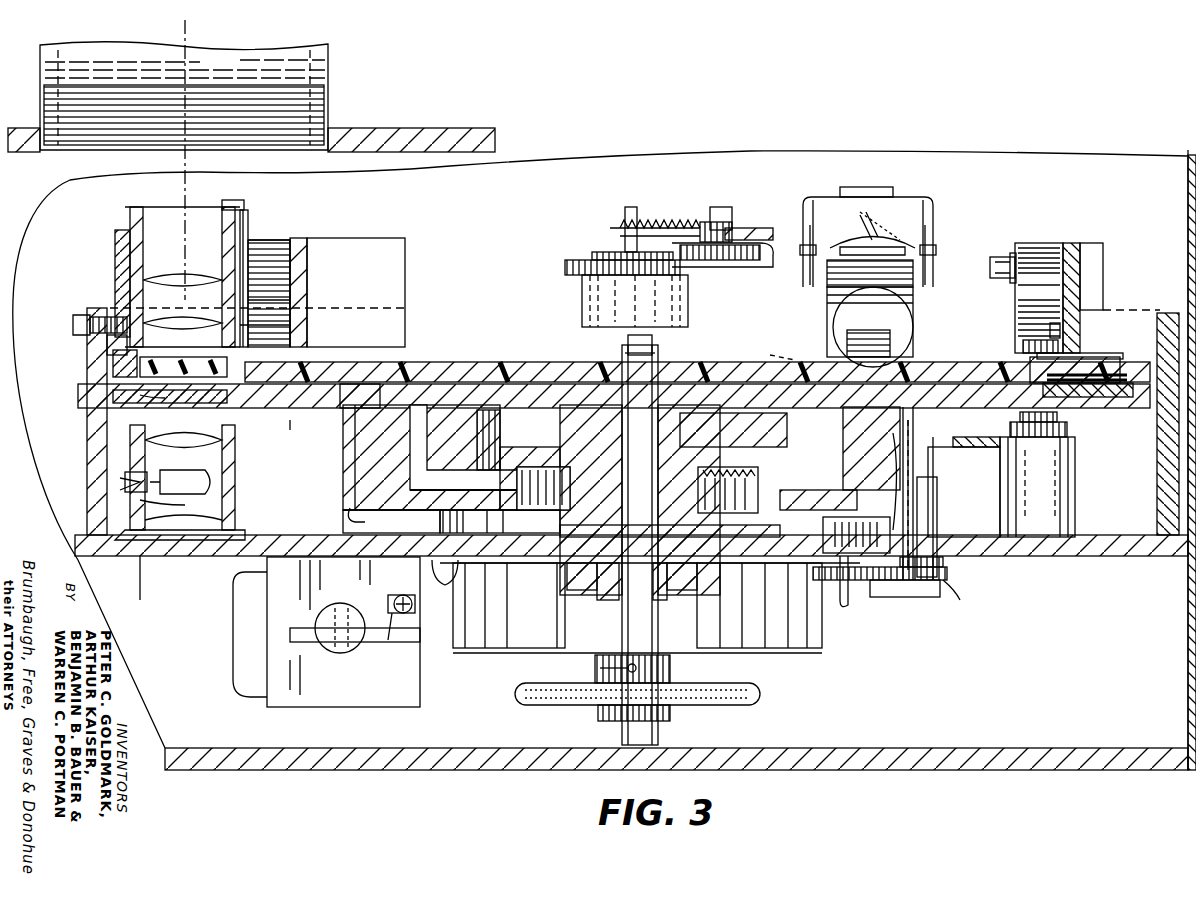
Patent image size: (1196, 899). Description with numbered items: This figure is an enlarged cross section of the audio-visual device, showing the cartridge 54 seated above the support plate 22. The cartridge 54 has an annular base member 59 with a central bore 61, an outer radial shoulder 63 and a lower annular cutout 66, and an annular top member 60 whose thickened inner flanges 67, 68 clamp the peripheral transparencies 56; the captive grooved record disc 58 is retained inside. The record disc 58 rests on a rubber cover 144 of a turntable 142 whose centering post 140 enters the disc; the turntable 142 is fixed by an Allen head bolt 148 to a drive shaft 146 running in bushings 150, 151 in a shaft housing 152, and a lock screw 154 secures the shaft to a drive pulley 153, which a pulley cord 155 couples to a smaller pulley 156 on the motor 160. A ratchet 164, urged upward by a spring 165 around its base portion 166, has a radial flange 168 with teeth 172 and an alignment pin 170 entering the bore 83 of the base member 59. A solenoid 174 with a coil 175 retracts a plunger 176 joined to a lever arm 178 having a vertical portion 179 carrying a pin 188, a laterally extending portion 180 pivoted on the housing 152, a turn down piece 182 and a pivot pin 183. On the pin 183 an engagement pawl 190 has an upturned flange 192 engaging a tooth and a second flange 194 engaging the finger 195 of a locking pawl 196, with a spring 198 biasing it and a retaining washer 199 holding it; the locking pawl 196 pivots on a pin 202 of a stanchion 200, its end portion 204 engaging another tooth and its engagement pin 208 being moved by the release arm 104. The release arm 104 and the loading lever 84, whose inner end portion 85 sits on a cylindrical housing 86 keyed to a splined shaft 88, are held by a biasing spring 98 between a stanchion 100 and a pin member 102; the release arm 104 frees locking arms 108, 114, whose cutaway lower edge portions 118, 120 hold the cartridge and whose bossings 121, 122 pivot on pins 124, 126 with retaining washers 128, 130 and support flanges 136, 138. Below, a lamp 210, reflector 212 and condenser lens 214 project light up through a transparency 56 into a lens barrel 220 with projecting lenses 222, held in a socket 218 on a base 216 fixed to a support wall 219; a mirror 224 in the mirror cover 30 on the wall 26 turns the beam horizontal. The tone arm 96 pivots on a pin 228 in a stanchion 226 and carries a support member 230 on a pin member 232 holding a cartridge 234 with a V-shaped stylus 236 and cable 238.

The support plate 22 is at (135, 590).
The wall 26 is at (425, 128).
The fixed mirror cover 30 is at (330, 62).
The audio-visual cartridge 54 is at (120, 410).
The transparencies 56 is at (145, 385).
The grooved record disc 58 is at (432, 380).
The annular base member 59 is at (310, 440).
The annular top member 60 is at (1018, 338).
The bore 61 is at (425, 420).
The outer radial shoulder 63 is at (1150, 400).
The annular cutout 66 is at (220, 408).
The inner flange 67 is at (1040, 356).
The inner flange 68 is at (1130, 370).
The bore 83 is at (345, 470).
The loading lever 84 is at (767, 218).
The inner end portion 85 is at (565, 268).
The cylindrical housing 86 is at (582, 298).
The splined shaft 88 is at (605, 252).
The tone arm 96 is at (943, 222).
The biasing spring 98 is at (663, 222).
The stanchion 100 is at (630, 207).
The pin member 102 is at (725, 207).
The release arm 104 is at (762, 357).
The first cartridge locking arm 108 is at (1112, 268).
The second cartridge locking arm 114 is at (322, 288).
The cutaway lower edge portion 118 is at (1060, 330).
The cutaway lower edge portion 120 is at (285, 330).
The bossing 121 is at (1036, 245).
The bossing 122 is at (280, 255).
The pivot pin 124 is at (1000, 262).
The pivot pin 126 is at (230, 212).
The retaining washer 128 is at (1013, 253).
The retaining washer 130 is at (275, 228).
The support flange 136 is at (1072, 245).
The support flange 138 is at (307, 250).
The centering post 140 is at (650, 375).
The turntable 142 is at (470, 490).
The cover 144 is at (480, 395).
The drive shaft 146 is at (615, 438).
The Allen head bolt 148 is at (632, 370).
The bushing 150 is at (665, 445).
The bushing 151 is at (665, 598).
The shaft housing 152 is at (590, 595).
The drive pulley 153 is at (670, 668).
The lock screw 154 is at (600, 668).
The pulley cord 155 is at (760, 694).
The drive pulley 156 is at (600, 712).
The motor 160 is at (490, 630).
The ratchet 164 is at (328, 522).
The spring 165 is at (501, 525).
The base portion 166 is at (700, 515).
The radial flange 168 is at (431, 457).
The alignment pin 170 is at (378, 395).
The teeth 172 is at (391, 523).
The solenoid 174 is at (290, 705).
The coil 175 is at (233, 650).
The plunger 176 is at (325, 612).
The lever arm 178 is at (493, 663).
The vertical portion 179 is at (432, 585).
The laterally extending portion 180 is at (534, 583).
The turn down piece 182 is at (845, 610).
The pivot pin 183 is at (900, 580).
The pin 188 is at (388, 597).
The engagement pawl 190 is at (958, 580).
The upturned flange portion 192 is at (925, 520).
The second upturned flange portion 194 is at (835, 530).
The finger portion 195 is at (883, 481).
The locking pawl 196 is at (973, 462).
The spring 198 is at (972, 600).
The retaining washer 199 is at (935, 597).
The stanchion 200 is at (1075, 500).
The pivot pin 202 is at (1045, 480).
The end portion 204 is at (985, 455).
The engagement pin 208 is at (793, 341).
The lamp 210 is at (205, 482).
The reflector 212 is at (185, 530).
The condenser lens 214 is at (200, 450).
The base 216 is at (107, 345).
The socket 218 is at (115, 252).
The vertical support wall 219 is at (73, 342).
The lens barrel 220 is at (128, 225).
The projecting lenses 222 is at (143, 280).
The optical projection mirror 224 is at (290, 90).
The stanchion 226 is at (830, 205).
The pivot pin 228 is at (848, 185).
The support member 230 is at (910, 285).
The pin member 232 is at (827, 280).
The cartridge 234 is at (890, 238).
The stylus 236 is at (905, 350).
The cable 238 is at (875, 230).